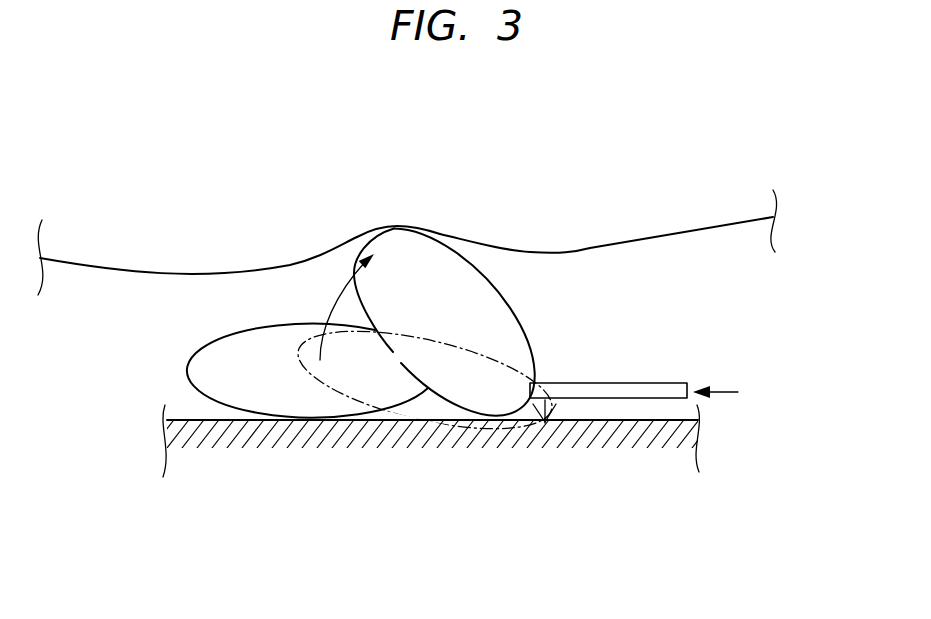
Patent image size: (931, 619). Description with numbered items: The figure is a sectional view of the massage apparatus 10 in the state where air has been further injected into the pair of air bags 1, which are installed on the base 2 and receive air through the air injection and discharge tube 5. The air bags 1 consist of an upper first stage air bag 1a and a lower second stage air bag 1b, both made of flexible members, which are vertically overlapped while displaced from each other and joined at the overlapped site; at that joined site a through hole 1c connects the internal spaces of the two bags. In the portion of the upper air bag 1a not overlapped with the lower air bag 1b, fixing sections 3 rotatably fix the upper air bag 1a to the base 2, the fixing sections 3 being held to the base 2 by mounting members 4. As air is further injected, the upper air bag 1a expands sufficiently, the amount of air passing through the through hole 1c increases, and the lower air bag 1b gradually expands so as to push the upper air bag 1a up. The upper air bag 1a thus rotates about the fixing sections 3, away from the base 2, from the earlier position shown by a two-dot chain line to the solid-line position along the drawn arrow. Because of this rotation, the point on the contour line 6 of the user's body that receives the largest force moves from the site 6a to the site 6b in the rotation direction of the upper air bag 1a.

The air bags 1 is at (344, 301).
The first air bag 1a is at (453, 313).
The second air bag 1b is at (258, 376).
The through hole 1c is at (393, 342).
The base 2 is at (410, 440).
The fixing sections 3 is at (530, 408).
The mounting members 4 is at (633, 392).
The air injection and discharge tube 5 is at (530, 413).
The contour line 6 is at (407, 214).
The site 6a is at (333, 247).
The site 6b is at (390, 227).
The massage apparatus 10 is at (477, 527).